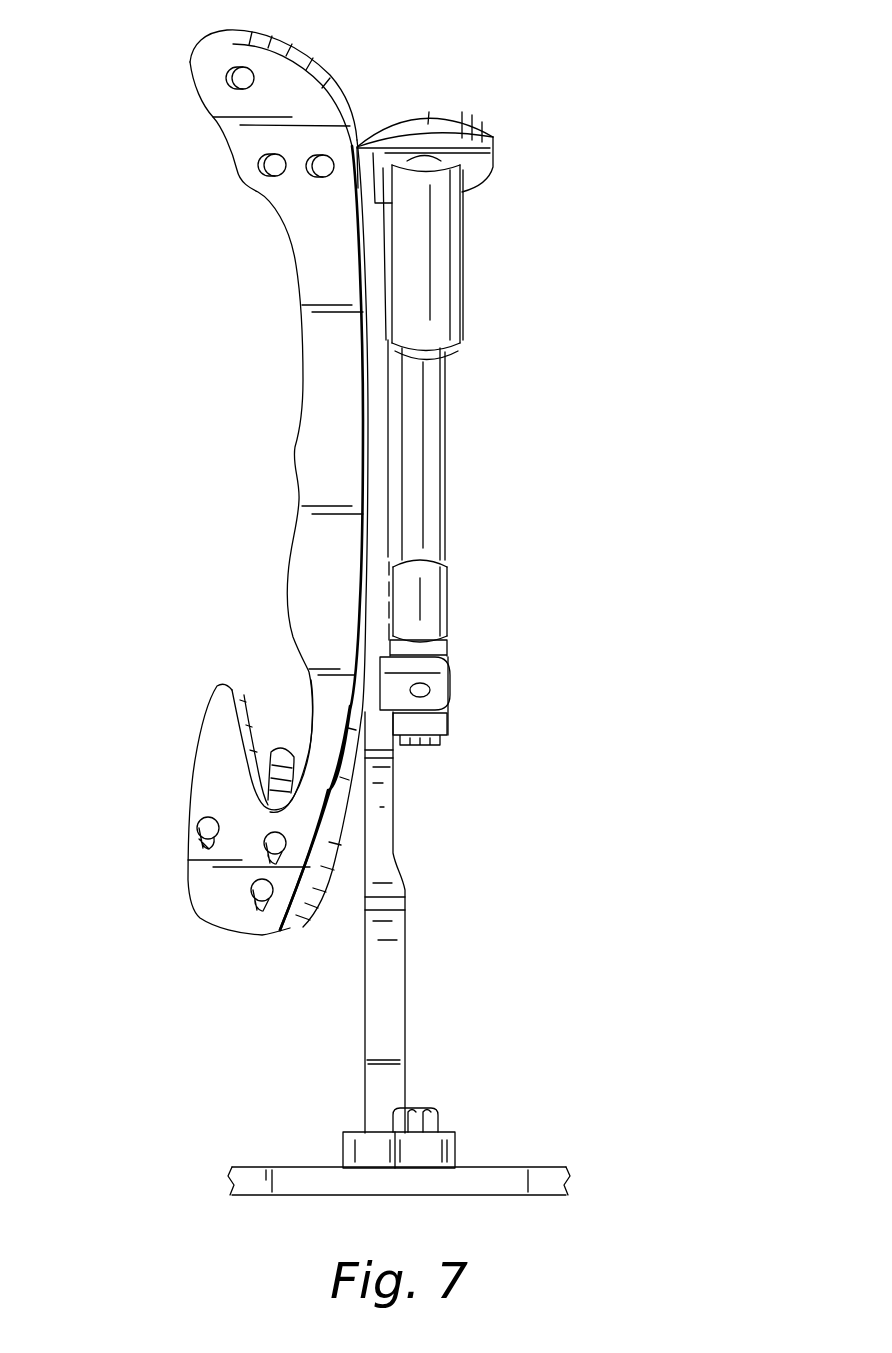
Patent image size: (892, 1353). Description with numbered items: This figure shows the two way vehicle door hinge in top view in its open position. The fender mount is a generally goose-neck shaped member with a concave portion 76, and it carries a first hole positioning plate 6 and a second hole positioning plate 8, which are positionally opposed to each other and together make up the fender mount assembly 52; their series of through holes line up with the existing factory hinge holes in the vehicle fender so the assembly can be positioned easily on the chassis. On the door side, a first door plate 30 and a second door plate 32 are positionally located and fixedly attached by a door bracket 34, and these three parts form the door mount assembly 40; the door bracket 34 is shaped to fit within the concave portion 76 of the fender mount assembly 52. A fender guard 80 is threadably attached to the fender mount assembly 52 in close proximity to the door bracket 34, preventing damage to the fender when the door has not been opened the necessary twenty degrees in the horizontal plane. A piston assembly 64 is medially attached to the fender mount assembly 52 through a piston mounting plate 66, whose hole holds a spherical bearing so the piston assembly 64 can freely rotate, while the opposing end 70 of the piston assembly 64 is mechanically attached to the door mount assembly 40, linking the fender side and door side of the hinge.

The first hole positioning plate 6 is at (236, 777).
The second hole positioning plate 8 is at (190, 54).
The first door plate 30 is at (391, 1129).
The second door plate 32 is at (343, 1148).
The door bracket 34 is at (449, 922).
The door mount assembly 40 is at (407, 1038).
The fender mount assembly 52 is at (250, 496).
The piston assembly 64 is at (462, 303).
The piston mounting plate 66 is at (453, 107).
The opposing end of the piston assembly 70 is at (450, 607).
The concave portion 76 is at (293, 453).
The fender guard 80 is at (273, 747).